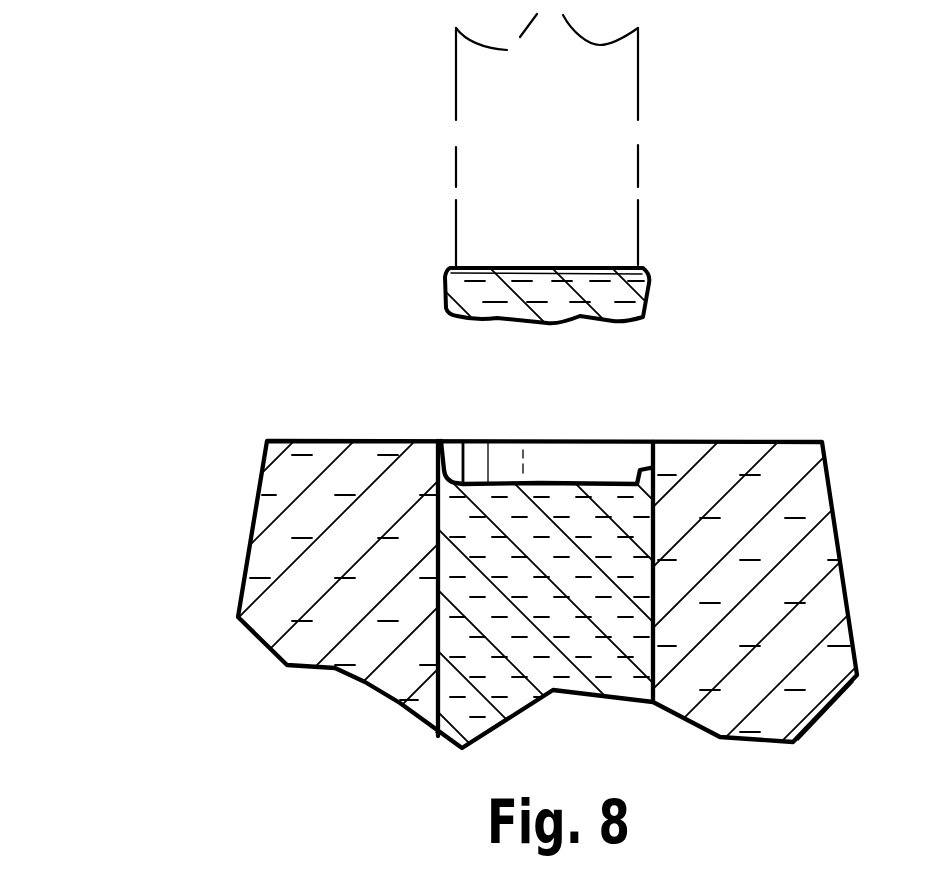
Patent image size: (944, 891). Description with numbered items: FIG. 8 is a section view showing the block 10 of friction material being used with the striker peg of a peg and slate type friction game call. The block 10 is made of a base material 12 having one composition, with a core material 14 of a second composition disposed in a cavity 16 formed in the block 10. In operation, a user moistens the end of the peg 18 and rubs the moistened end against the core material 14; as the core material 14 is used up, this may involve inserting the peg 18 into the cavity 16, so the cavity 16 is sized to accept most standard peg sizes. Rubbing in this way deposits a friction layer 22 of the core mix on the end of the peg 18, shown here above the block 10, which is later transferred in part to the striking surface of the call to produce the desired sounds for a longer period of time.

The block of friction material 10 is at (205, 424).
The base material 12 is at (293, 553).
The core material 14 is at (537, 533).
The cavity 16 is at (447, 458).
The peg 18 is at (455, 162).
The friction layer 22 is at (657, 297).